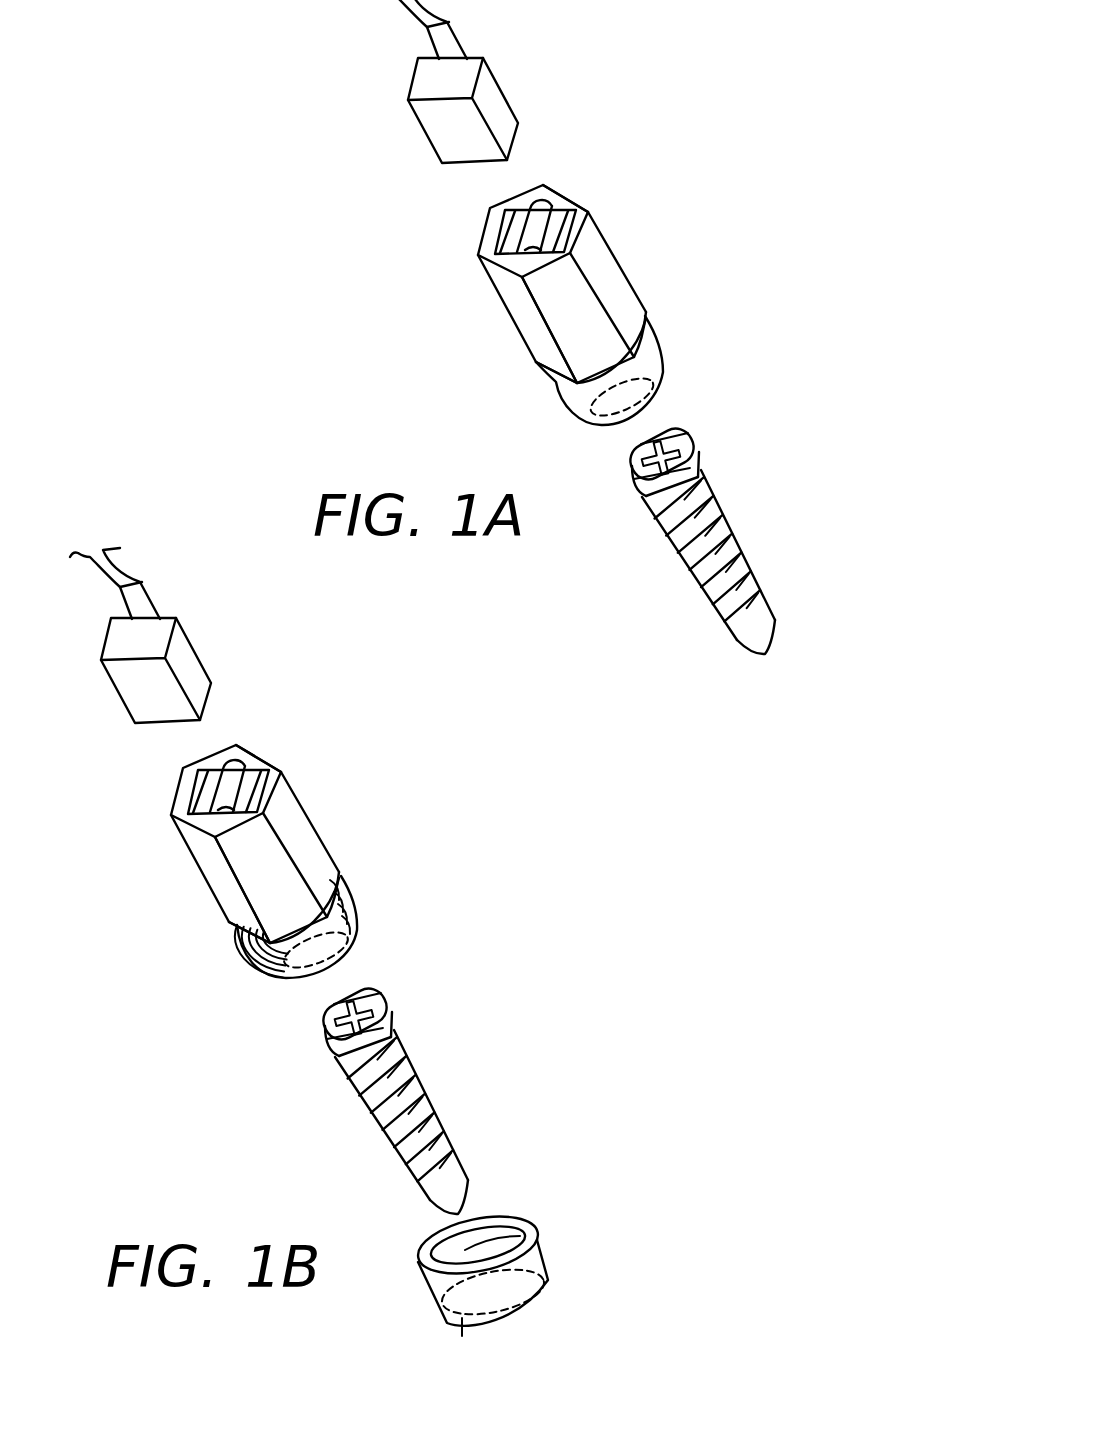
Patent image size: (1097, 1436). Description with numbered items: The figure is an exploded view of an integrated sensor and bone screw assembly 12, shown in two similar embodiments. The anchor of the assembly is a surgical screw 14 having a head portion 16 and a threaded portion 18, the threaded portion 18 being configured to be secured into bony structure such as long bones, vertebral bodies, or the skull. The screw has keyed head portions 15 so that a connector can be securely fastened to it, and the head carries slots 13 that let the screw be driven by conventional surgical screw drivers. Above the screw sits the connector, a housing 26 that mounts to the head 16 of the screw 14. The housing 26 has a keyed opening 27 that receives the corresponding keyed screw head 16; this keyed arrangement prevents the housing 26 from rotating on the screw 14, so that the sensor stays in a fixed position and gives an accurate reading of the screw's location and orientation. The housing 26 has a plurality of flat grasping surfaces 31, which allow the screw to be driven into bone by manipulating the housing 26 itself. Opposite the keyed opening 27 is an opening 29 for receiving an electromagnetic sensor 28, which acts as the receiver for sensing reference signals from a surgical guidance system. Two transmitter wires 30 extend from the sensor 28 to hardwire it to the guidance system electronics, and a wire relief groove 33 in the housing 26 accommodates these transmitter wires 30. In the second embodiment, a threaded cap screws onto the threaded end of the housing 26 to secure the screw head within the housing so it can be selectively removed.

In FIG. 1A, the fastener assembly 12 is at (745, 252).
In FIG. 1B, the fastener assembly 12 is at (343, 960).
In FIG. 1A, the slots 13 is at (630, 472).
In FIG. 1B, the slots 13 is at (312, 1019).
In FIG. 1A, the surgical screw 14 is at (742, 518).
In FIG. 1B, the surgical screw 14 is at (377, 1084).
In FIG. 1A, the keyed head portions 15 is at (655, 488).
In FIG. 1B, the keyed head portions 15 is at (346, 1081).
In FIG. 1A, the head portion 16 is at (700, 450).
In FIG. 1B, the head portion 16 is at (425, 995).
In FIG. 1A, the threaded portion 18 is at (748, 555).
In FIG. 1B, the threaded portion 18 is at (429, 1122).
In FIG. 1A, the housing 26 is at (630, 277).
In FIG. 1B, the housing 26 is at (295, 842).
In FIG. 1A, the keyed opening 27 is at (662, 373).
In FIG. 1B, the keyed opening 27 is at (331, 927).
In FIG. 1A, the electromagnetic sensor 28 is at (505, 90).
In FIG. 1B, the electromagnetic sensor 28 is at (199, 655).
In FIG. 1A, the opening 29 is at (568, 216).
In FIG. 1B, the opening 29 is at (279, 781).
In FIG. 1A, the transmitter wires 30 is at (455, 40).
In FIG. 1B, the transmitter wires 30 is at (140, 583).
In FIG. 1A, the flat grasping surfaces 31 is at (572, 335).
In FIG. 1B, the flat grasping surfaces 31 is at (216, 900).
In FIG. 1A, the wire relief groove 33 is at (553, 190).
In FIG. 1B, the wire relief groove 33 is at (282, 739).